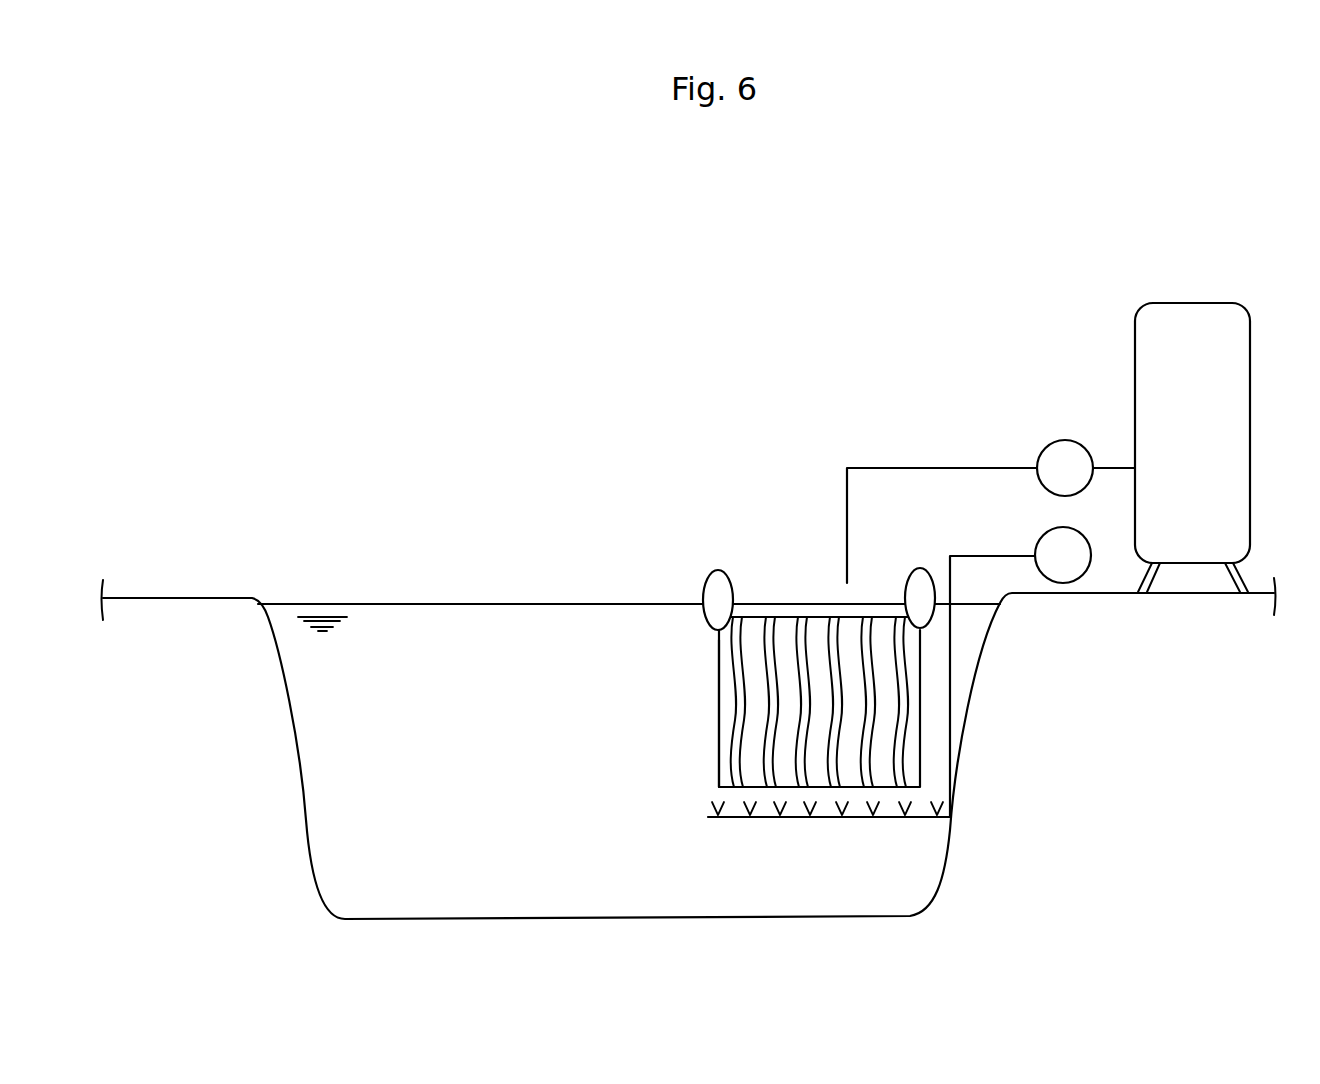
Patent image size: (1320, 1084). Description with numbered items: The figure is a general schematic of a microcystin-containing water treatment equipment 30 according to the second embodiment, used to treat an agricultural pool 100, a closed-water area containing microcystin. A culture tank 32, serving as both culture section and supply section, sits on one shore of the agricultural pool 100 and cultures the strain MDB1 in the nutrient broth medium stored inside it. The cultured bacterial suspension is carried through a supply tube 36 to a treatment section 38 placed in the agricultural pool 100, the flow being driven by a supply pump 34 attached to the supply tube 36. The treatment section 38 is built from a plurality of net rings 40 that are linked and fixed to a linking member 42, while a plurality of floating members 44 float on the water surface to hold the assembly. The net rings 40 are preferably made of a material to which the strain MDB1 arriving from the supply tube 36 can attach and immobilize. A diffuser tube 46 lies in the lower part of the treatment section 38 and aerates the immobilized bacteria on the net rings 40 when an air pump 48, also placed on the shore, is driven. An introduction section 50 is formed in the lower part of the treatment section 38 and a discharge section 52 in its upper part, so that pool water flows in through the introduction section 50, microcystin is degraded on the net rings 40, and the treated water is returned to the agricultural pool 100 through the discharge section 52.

The agricultural pool 100 is at (295, 532).
The microcystin-containing water treatment equipment 30 is at (774, 377).
The culture tank 32 is at (1251, 405).
The supply pump 34 is at (1062, 440).
The supply tube 36 is at (947, 468).
The treatment section 38 is at (827, 594).
The net rings 40 is at (802, 710).
The linking member 42 is at (722, 792).
The floating members 44 is at (718, 570).
The diffuser tube 46 is at (825, 817).
The air pump 48 is at (1045, 537).
The introduction section 50 is at (862, 800).
The discharge section 52 is at (853, 615).